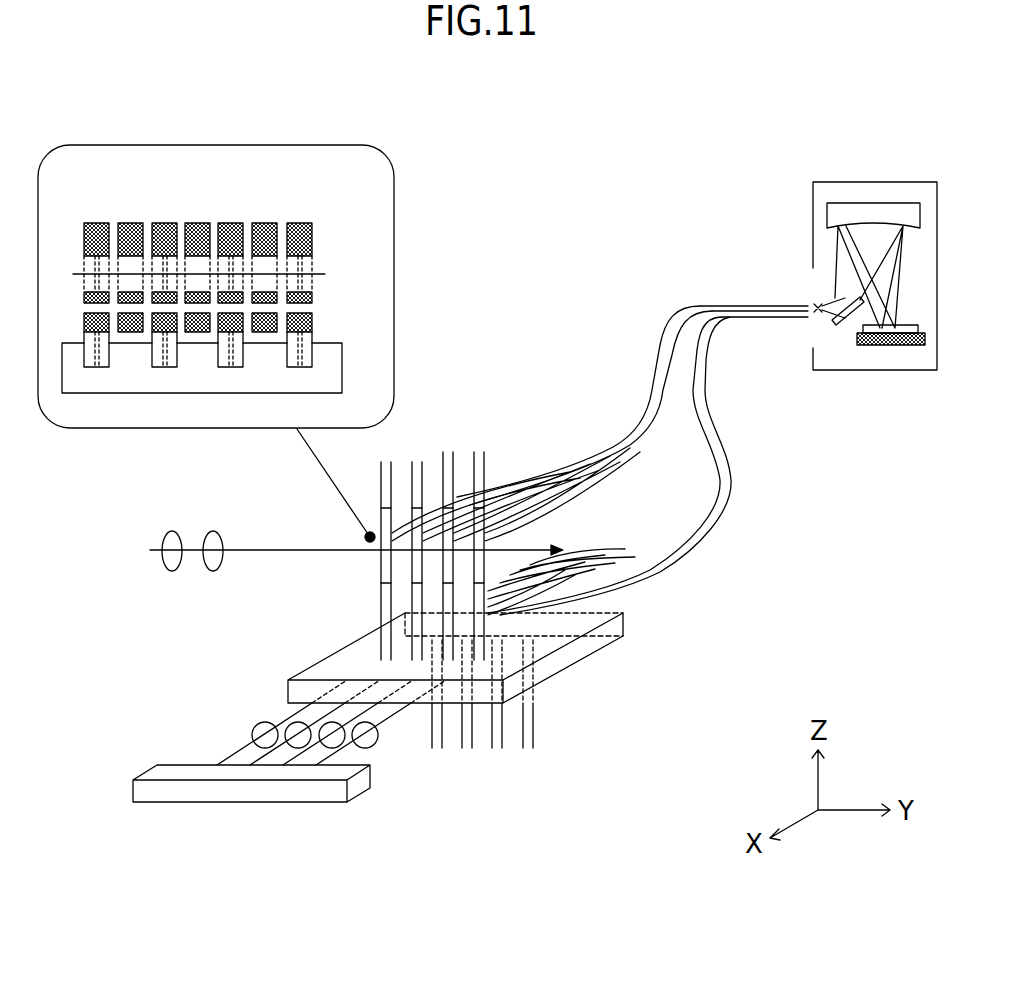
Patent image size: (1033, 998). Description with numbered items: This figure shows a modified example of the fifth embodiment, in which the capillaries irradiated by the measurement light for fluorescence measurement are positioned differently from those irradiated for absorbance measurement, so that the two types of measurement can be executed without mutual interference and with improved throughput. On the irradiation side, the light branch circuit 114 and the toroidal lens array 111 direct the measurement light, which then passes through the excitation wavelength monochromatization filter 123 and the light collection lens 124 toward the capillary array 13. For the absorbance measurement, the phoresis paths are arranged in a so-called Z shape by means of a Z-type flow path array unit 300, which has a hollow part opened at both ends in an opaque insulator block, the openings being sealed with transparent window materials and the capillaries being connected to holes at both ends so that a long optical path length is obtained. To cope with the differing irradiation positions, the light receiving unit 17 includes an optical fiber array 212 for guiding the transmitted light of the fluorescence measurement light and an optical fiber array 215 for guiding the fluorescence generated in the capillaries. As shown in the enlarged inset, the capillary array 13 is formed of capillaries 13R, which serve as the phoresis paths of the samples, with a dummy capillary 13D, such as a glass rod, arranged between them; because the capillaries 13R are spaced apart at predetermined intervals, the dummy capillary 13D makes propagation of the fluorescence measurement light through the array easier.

The capillaries 13R is at (228, 223).
The dummy capillary 13D is at (268, 223).
The light receiving unit 17 is at (781, 254).
The optical fiber array 215 is at (648, 390).
The optical fiber array 212 is at (720, 497).
The excitation wavelength monochromatization filter 123 is at (172, 531).
The light collection lens 124 is at (213, 531).
The Z-type flow path array unit 300 is at (570, 652).
The toroidal lens array 111 is at (246, 713).
The light branch circuit 114 is at (295, 797).
The capillary array 13 is at (539, 745).